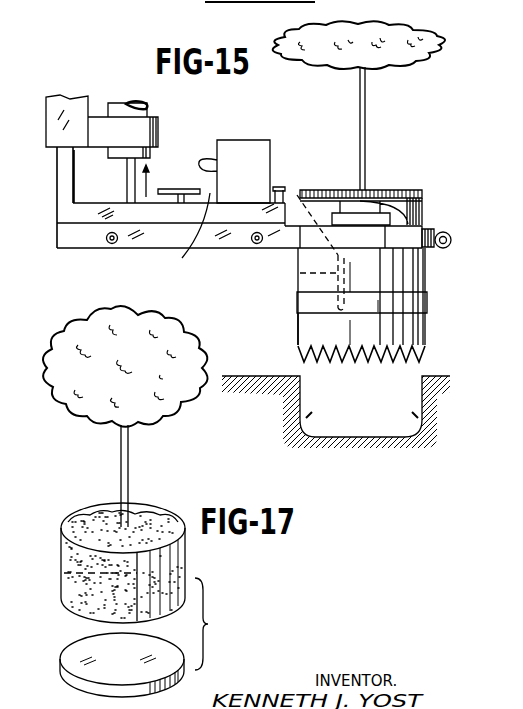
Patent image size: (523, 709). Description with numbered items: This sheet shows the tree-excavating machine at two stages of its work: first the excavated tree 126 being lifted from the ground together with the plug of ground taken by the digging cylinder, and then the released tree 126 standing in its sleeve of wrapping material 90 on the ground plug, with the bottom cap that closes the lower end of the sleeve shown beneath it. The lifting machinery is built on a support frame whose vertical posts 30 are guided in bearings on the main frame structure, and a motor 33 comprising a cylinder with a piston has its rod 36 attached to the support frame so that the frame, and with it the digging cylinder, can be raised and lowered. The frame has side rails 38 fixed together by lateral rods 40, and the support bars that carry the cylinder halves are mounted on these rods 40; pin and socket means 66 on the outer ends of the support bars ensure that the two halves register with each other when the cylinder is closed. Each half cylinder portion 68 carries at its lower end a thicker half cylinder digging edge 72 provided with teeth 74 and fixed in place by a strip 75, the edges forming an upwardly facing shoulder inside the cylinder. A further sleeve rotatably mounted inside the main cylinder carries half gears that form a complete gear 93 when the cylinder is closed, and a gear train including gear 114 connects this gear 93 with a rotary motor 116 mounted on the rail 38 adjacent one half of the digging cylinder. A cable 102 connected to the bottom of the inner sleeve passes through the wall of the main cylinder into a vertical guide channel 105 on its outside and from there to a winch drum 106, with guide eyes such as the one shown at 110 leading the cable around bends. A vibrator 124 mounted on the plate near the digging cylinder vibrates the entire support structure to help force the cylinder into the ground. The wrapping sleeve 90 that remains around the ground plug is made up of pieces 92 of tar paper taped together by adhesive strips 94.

In FIG. 15, the vertical posts 30 is at (68, 164).
In FIG. 15, the motor 33 is at (113, 82).
In FIG. 15, the rod 36 is at (127, 173).
In FIG. 15, the side rails 38 is at (86, 212).
In FIG. 15, the lateral rods 40 is at (111, 244).
In FIG. 15, the pin and socket means 66 is at (444, 218).
In FIG. 15, the half cylinder portion 68 is at (410, 273).
In FIG. 15, the half cylinder digging edge 72 is at (310, 328).
In FIG. 15, the teeth 74 is at (306, 352).
In FIG. 15, the strip 75 is at (426, 301).
In FIG. 17, the sleeve of wrapping material 90 is at (72, 591).
In FIG. 17, the pieces of tar paper 92 is at (172, 571).
In FIG. 15, the gear 93 is at (316, 184).
In FIG. 17, the adhesive strips 94 is at (112, 503).
In FIG. 15, the cable 102 is at (175, 237).
In FIG. 15, the vertical guide channel 105 is at (300, 273).
In FIG. 15, the winch drum 106 is at (176, 188).
In FIG. 15, the guide roller or eye 110 is at (286, 182).
In FIG. 15, the gear 114 is at (373, 190).
In FIG. 15, the rotary motor 116 is at (352, 206).
In FIG. 15, the vibrator 124 is at (243, 152).
In FIG. 15, the tree 126 is at (366, 102).
In FIG. 17, the tree 126 is at (128, 457).